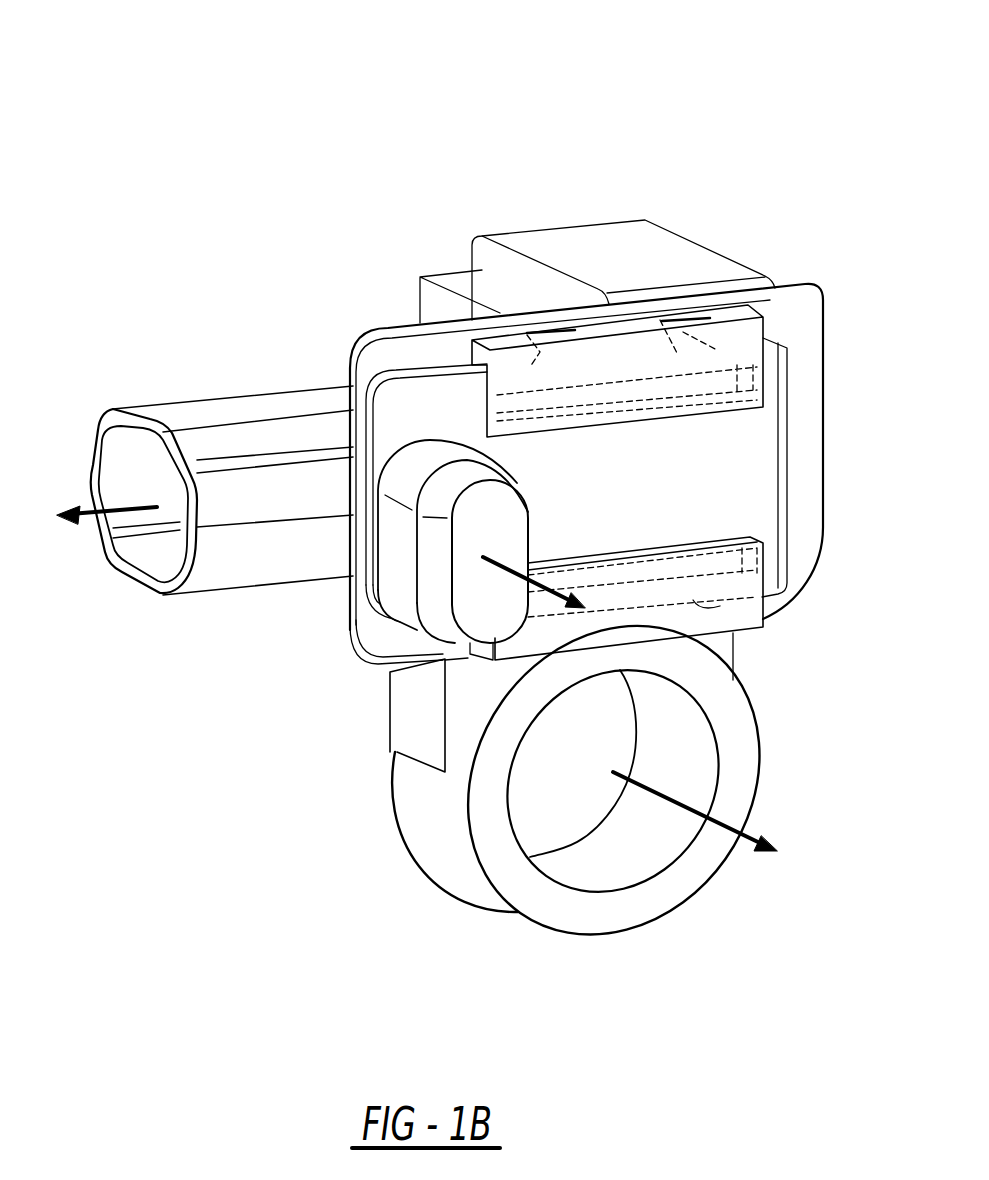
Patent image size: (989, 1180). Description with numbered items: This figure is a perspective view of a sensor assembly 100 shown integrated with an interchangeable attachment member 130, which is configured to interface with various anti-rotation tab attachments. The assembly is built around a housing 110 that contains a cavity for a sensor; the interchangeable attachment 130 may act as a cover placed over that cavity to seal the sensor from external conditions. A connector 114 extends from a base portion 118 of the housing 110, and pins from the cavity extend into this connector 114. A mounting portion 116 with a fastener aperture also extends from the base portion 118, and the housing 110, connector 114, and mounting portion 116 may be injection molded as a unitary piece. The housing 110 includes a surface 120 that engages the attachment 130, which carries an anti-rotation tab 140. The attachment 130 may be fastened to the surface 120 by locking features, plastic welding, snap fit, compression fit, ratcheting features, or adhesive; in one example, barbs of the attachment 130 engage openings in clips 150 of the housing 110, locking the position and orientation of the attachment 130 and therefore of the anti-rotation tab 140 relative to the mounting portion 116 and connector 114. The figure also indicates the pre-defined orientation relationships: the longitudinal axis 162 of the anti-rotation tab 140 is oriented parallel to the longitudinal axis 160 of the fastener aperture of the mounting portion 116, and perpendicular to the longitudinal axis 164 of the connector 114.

The sensor assembly 100 is at (246, 131).
The housing 110 is at (605, 248).
The connector 114 is at (238, 410).
The mounting portion 116 is at (645, 848).
The base portion 118 is at (678, 253).
The surface 120 is at (390, 360).
The interchangeable attachment member 130 is at (447, 400).
The anti-rotation tab 140 is at (477, 600).
The clips 150 is at (743, 348).
The longitudinal axis of the fastener aperture 160 is at (688, 805).
The longitudinal axis of the anti-rotation tab 162 is at (543, 590).
The longitudinal axis of the connector 164 is at (125, 512).